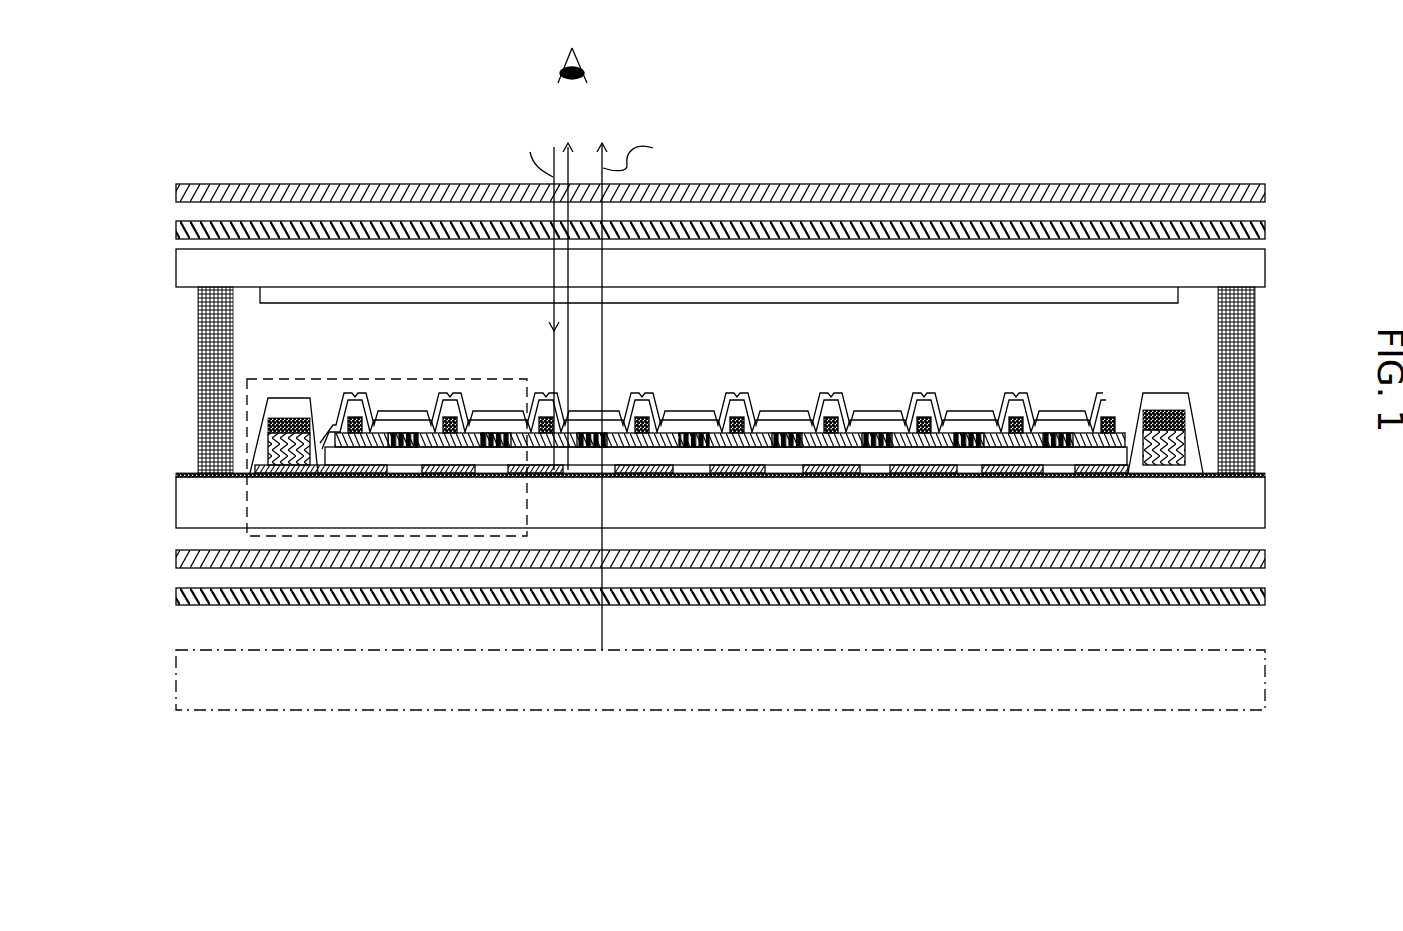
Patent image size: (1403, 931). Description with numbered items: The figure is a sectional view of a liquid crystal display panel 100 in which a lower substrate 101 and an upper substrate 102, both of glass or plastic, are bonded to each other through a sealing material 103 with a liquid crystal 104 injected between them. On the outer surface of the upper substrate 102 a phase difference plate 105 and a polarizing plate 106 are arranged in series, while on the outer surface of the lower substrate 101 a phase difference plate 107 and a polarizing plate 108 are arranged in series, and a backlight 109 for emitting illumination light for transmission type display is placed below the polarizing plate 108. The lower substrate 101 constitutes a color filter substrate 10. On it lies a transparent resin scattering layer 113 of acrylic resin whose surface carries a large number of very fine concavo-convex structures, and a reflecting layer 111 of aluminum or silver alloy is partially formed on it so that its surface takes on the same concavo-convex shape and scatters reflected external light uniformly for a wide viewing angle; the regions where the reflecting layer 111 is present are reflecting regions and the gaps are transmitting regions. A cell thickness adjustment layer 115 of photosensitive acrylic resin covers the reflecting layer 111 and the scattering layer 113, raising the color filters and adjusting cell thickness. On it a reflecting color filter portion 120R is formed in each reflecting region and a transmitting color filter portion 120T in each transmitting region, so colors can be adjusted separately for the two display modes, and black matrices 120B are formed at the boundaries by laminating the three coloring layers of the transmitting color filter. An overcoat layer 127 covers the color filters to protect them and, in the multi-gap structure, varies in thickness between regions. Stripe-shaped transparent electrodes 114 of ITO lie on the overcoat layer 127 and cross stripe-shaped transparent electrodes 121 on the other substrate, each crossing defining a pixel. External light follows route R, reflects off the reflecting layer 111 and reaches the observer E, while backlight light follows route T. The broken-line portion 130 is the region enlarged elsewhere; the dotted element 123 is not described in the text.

The liquid crystal display panel 100 is at (808, 162).
The color filter substrate 10 is at (952, 374).
The substrate 101 is at (1258, 511).
The substrate 102 is at (1266, 265).
The sealing material 103 is at (1248, 322).
The liquid crystal 104 is at (808, 343).
The phase difference plate 105 is at (1265, 229).
The polarizing plate 106 is at (1197, 184).
The phase difference plate 107 is at (1265, 565).
The polarizing plate 108 is at (1265, 597).
The backlight 109 is at (1263, 672).
The reflecting layer 111 is at (905, 473).
The resin scattering layer 113 is at (1265, 469).
The transparent electrode 114 is at (698, 415).
The cell thickness adjustment layer 115 is at (785, 457).
The reflecting color filter portion 120R is at (982, 446).
The transmitting color filter portion 120T is at (1070, 447).
The black matrix 120B is at (1115, 413).
The transparent electrode 121 is at (270, 295).
The electrode 123 is at (1186, 436).
The overcoat layer 127 is at (1165, 393).
The portion 130 is at (245, 433).